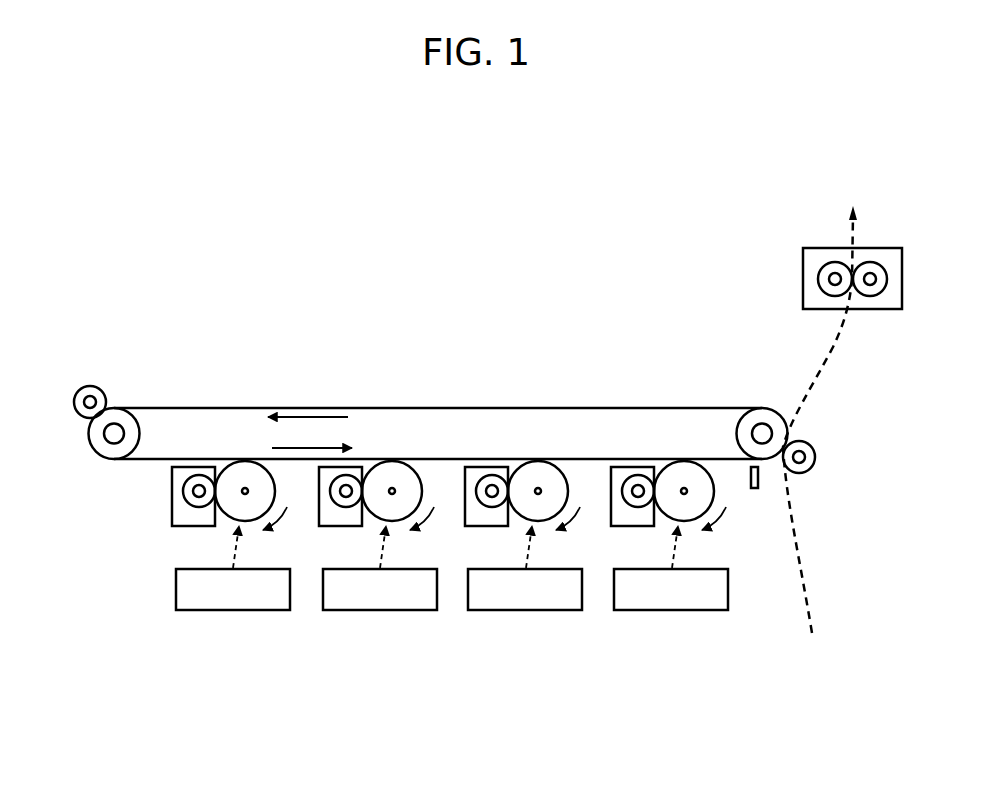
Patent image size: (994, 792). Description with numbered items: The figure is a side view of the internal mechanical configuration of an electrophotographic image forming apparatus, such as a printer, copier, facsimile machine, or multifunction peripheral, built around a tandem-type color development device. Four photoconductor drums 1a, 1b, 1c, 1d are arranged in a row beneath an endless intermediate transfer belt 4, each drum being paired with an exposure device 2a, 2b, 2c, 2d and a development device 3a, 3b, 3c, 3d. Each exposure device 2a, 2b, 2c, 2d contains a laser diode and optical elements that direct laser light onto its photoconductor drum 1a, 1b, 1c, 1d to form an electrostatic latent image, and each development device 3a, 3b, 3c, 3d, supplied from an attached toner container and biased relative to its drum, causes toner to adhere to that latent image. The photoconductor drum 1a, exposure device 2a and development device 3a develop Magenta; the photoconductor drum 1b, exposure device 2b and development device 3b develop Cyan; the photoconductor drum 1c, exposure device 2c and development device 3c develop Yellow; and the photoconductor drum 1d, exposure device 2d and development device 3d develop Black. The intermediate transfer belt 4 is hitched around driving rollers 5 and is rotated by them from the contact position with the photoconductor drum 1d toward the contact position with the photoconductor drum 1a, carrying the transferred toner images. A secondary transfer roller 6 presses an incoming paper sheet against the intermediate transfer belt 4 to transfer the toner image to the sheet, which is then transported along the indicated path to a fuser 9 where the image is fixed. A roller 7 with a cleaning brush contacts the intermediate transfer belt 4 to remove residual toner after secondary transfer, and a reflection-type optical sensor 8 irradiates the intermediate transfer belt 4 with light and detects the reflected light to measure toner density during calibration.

The photoconductor drum 1a is at (704, 466).
The photoconductor drum 1b is at (558, 466).
The photoconductor drum 1c is at (412, 466).
The photoconductor drum 1d is at (265, 466).
The exposure device 2a is at (697, 610).
The exposure device 2b is at (551, 610).
The exposure device 2c is at (405, 610).
The exposure device 2d is at (258, 610).
The development device 3a is at (632, 527).
The development device 3b is at (486, 527).
The development device 3c is at (340, 527).
The development device 3d is at (193, 527).
The intermediate transfer belt 4 is at (348, 408).
The driving rollers 5 is at (96, 452).
The secondary transfer roller 6 is at (810, 469).
The roller 7 is at (90, 385).
The sensor 8 is at (756, 490).
The fuser 9 is at (803, 277).